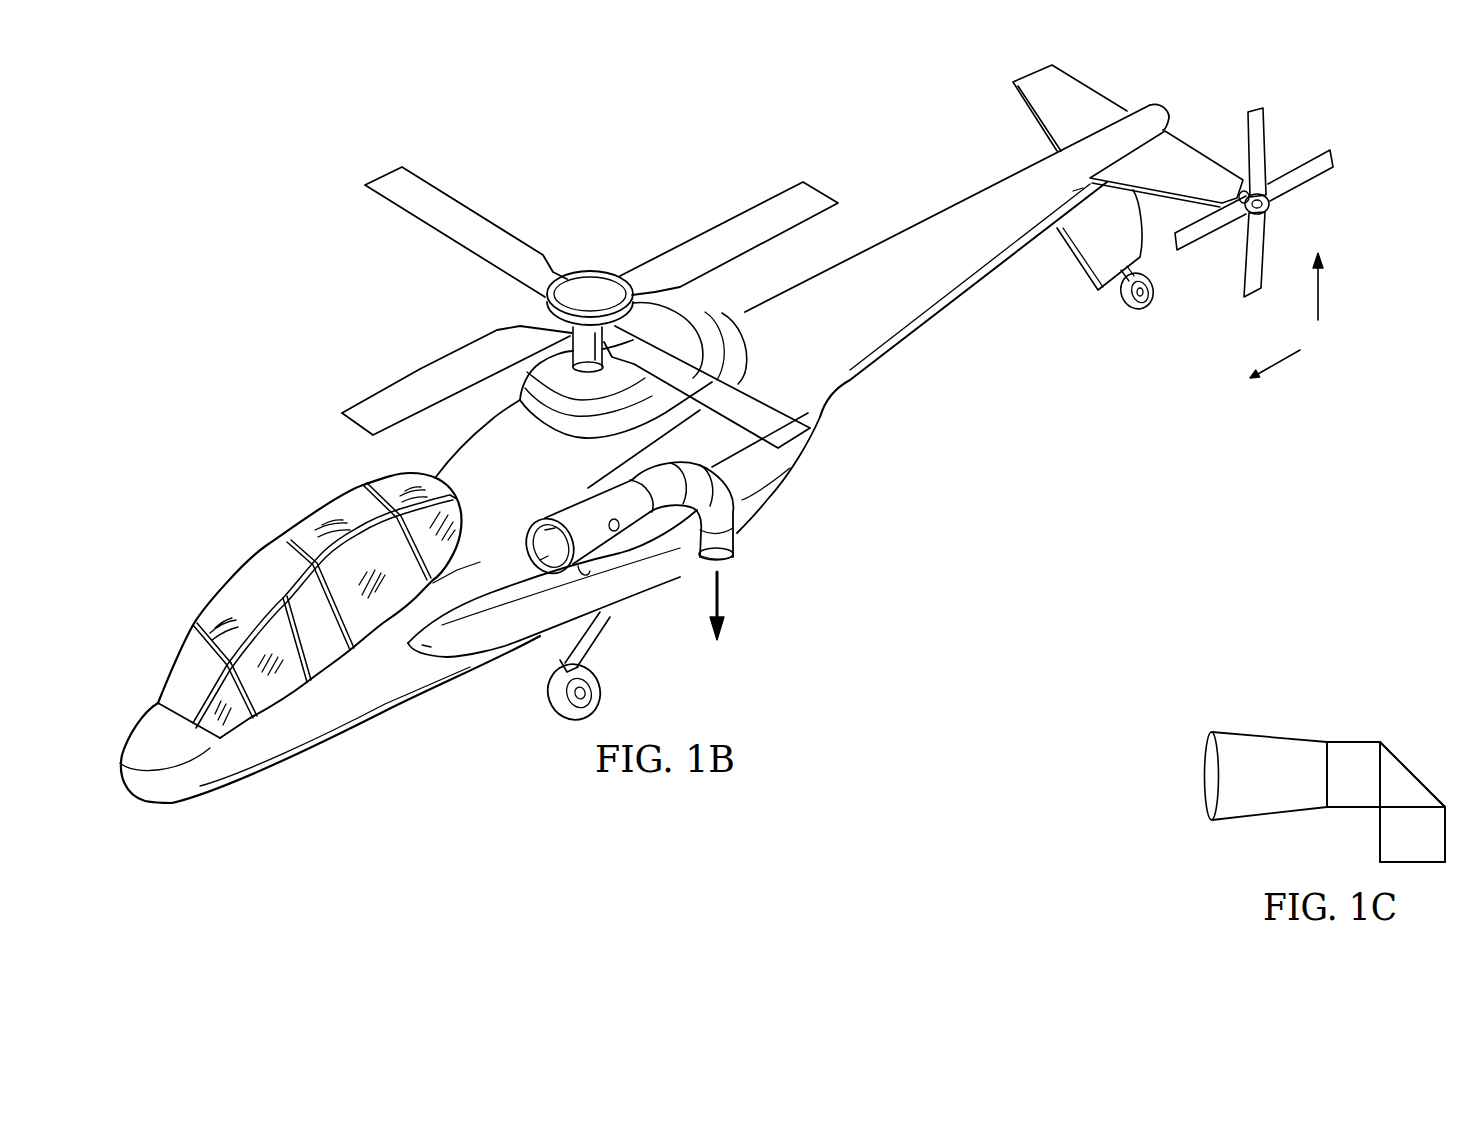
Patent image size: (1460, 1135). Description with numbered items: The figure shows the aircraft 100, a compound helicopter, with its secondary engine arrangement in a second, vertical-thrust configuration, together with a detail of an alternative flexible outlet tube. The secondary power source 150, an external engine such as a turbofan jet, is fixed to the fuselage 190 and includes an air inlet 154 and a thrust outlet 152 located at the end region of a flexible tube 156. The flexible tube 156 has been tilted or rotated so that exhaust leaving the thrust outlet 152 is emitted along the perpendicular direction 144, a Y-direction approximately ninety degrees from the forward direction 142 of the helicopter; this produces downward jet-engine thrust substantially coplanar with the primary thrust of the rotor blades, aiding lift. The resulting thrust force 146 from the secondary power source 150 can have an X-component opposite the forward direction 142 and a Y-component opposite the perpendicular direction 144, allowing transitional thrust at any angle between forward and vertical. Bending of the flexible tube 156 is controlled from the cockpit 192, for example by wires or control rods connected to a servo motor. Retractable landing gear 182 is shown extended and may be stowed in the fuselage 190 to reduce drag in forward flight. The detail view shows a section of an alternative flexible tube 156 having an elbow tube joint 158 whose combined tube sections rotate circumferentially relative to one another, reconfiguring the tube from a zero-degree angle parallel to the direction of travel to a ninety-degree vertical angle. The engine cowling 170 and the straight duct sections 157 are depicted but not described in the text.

In FIG. 1B, the aircraft 100 is at (301, 110).
In FIG. 1B, the forward direction 142 is at (1283, 360).
In FIG. 1B, the perpendicular direction 144 is at (1320, 290).
In FIG. 1B, the thrust force 146 is at (722, 594).
In FIG. 1B, the secondary power source 150 is at (573, 507).
In FIG. 1C, the secondary power source 150 is at (1266, 732).
In FIG. 1B, the thrust outlet 152 is at (739, 566).
In FIG. 1B, the air inlet 154 is at (527, 550).
In FIG. 1B, the flexible tube 156 is at (745, 512).
In FIG. 1C, the flexible tube 156 is at (1391, 659).
In FIG. 1C, the straight duct section 157 is at (1353, 738).
In FIG. 1C, the elbow tube joint 158 is at (1410, 772).
In FIG. 1B, the engine 170 is at (672, 327).
In FIG. 1B, the retractable landing gear 182 is at (550, 697).
In FIG. 1B, the fuselage 190 is at (507, 482).
In FIG. 1B, the cockpit 192 is at (154, 655).